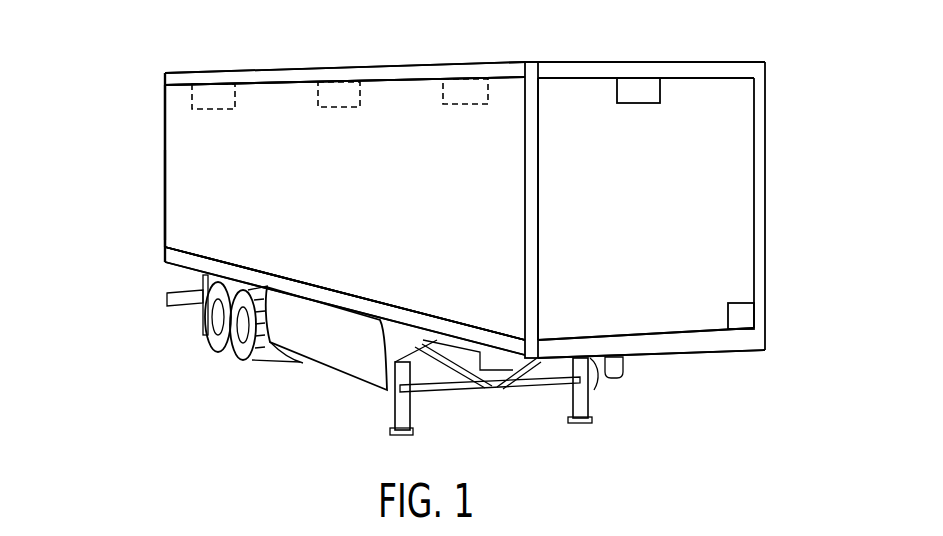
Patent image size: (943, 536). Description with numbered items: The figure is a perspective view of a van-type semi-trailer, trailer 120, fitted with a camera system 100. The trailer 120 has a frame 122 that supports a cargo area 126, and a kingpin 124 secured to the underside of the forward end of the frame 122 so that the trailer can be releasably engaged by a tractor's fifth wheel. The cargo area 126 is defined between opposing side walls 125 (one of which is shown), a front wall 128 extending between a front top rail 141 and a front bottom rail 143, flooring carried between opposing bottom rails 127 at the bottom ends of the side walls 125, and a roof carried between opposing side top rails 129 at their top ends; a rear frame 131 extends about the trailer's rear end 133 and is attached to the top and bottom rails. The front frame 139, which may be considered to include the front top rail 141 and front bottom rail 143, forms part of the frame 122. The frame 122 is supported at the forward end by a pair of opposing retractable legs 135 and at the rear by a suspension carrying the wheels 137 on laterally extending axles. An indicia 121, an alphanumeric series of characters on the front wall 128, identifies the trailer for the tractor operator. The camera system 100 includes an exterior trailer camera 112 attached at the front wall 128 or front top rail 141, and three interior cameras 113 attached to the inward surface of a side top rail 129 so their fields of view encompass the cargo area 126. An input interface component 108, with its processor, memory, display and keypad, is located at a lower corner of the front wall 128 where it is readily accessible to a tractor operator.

The camera system 100 is at (606, 92).
The input interface component 108 is at (737, 303).
The exterior trailer camera 112 is at (642, 104).
The interior cameras 113 is at (222, 140).
The trailer 120 is at (207, 391).
The indicia 121 is at (725, 130).
The frame 122 is at (525, 402).
The kingpin 124 is at (622, 368).
The side walls 125 is at (185, 218).
The cargo area 126 is at (187, 175).
The bottom rails 127 is at (187, 257).
The front wall 128 is at (743, 242).
The side top rails 129 is at (278, 70).
The rear frame 131 is at (165, 120).
The rear end 133 is at (141, 195).
The retractable legs 135 is at (395, 416).
The wheels 137 is at (210, 348).
The front frame 139 is at (525, 248).
The front top rail 141 is at (660, 63).
The front bottom rail 143 is at (570, 340).